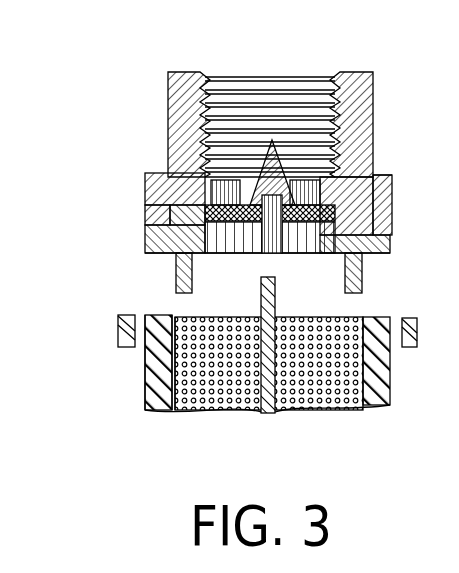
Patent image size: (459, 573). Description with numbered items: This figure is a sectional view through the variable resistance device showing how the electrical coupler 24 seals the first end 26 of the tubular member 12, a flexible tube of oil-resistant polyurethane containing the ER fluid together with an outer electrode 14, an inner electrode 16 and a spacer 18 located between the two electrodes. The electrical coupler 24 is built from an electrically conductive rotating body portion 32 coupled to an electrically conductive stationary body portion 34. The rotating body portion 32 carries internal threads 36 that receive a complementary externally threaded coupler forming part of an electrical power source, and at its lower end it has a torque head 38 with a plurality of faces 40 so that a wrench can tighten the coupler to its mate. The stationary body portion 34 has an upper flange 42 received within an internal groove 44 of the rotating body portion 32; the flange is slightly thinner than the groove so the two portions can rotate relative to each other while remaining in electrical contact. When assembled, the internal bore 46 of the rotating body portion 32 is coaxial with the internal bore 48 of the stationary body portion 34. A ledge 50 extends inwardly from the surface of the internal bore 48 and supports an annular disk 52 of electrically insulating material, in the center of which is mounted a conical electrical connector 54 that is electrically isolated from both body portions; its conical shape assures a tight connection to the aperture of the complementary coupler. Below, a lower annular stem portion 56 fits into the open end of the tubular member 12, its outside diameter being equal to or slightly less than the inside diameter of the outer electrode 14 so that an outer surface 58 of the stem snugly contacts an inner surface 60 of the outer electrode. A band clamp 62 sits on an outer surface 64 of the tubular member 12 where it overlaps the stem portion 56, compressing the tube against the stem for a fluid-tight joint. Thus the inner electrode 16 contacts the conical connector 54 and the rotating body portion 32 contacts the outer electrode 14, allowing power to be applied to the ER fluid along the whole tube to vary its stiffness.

The tubular member 12 is at (150, 395).
The outer electrode 14 is at (170, 412).
The inner electrode 16 is at (270, 412).
The spacer 18 is at (335, 405).
The electrical coupler 24 is at (104, 72).
The first end 26 is at (400, 382).
The rotating body portion 32 is at (362, 92).
The stationary body portion 34 is at (380, 250).
The internal threads 36 is at (305, 76).
The torque head 38 is at (147, 192).
The faces 40 is at (393, 200).
The upper flange 42 is at (163, 208).
The internal groove 44 is at (172, 222).
The internal bore 46 is at (372, 174).
The internal bore 48 is at (322, 250).
The ledge 50 is at (222, 252).
The annular disk 52 is at (232, 182).
The conical electrical connector 54 is at (260, 190).
The lower annular stem portion 56 is at (362, 282).
The outer surface 58 is at (178, 280).
The inner surface 60 is at (172, 375).
The band clamp 62 is at (118, 330).
The outer surface 64 is at (145, 375).